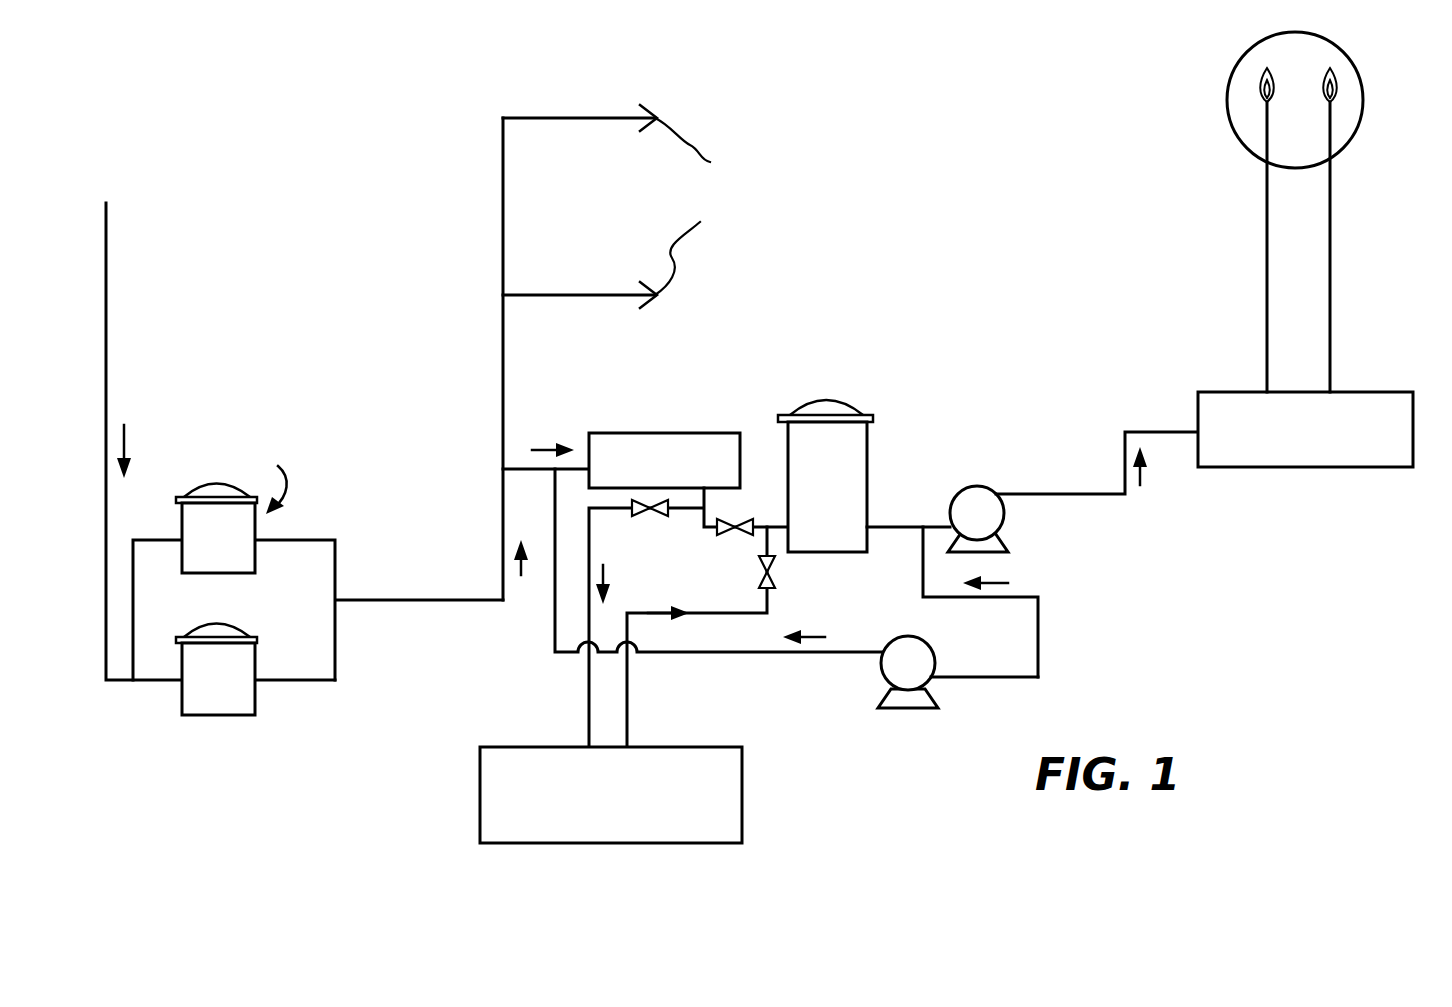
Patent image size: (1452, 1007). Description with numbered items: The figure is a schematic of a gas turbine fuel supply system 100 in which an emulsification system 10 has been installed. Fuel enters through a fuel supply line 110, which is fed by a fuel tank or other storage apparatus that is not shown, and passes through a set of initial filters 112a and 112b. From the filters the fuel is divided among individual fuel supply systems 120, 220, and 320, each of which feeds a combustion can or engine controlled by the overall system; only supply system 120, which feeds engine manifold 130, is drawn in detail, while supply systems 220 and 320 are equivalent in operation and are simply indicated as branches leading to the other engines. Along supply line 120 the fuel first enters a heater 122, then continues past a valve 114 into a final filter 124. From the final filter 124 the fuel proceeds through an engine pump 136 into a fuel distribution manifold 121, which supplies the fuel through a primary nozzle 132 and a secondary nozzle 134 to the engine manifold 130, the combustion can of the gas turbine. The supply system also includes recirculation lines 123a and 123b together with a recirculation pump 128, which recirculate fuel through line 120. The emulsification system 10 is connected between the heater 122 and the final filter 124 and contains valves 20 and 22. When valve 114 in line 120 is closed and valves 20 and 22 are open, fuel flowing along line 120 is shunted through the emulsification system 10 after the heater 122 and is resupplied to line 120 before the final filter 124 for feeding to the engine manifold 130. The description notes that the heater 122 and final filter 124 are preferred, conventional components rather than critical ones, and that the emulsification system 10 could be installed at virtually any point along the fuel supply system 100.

The emulsification system 10 is at (742, 800).
The valve 20 is at (650, 516).
The valve 22 is at (777, 578).
The fuel supply system 100 is at (396, 722).
The fuel supply line 110 is at (108, 372).
The initial filter 112a is at (245, 550).
The initial filter 112b is at (245, 693).
The valve 114 is at (725, 535).
The fuel supply system (engine manifold supply line) 120 is at (513, 469).
The fuel distribution manifold 121 is at (1310, 467).
The heater 122 is at (645, 433).
The recirculation line 123a is at (755, 652).
The recirculation line 123b is at (950, 597).
The final filter 124 is at (853, 500).
The recirculation pump 128 is at (880, 683).
The engine manifold 130 is at (1233, 133).
The primary nozzle 132 is at (1267, 348).
The secondary nozzle 134 is at (1330, 380).
The engine pump 136 is at (997, 492).
The fuel supply system 220 is at (584, 295).
The fuel supply system 320 is at (592, 120).